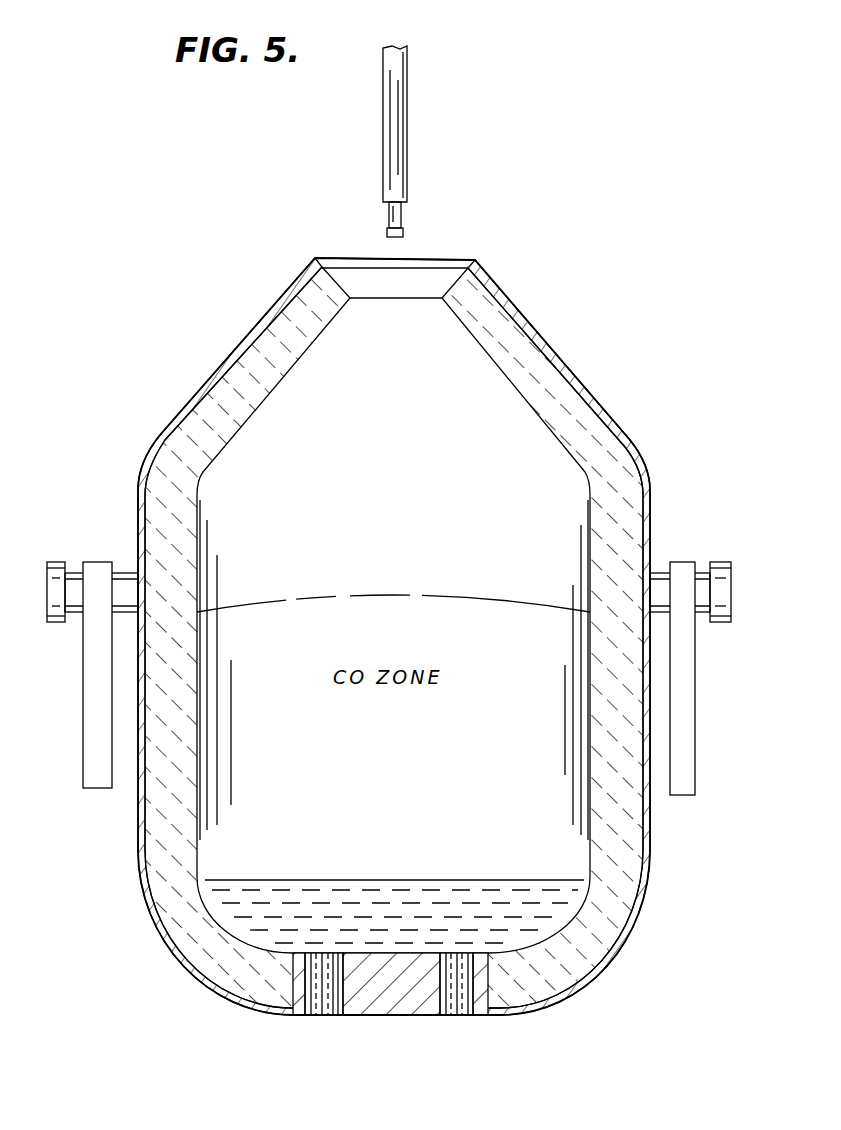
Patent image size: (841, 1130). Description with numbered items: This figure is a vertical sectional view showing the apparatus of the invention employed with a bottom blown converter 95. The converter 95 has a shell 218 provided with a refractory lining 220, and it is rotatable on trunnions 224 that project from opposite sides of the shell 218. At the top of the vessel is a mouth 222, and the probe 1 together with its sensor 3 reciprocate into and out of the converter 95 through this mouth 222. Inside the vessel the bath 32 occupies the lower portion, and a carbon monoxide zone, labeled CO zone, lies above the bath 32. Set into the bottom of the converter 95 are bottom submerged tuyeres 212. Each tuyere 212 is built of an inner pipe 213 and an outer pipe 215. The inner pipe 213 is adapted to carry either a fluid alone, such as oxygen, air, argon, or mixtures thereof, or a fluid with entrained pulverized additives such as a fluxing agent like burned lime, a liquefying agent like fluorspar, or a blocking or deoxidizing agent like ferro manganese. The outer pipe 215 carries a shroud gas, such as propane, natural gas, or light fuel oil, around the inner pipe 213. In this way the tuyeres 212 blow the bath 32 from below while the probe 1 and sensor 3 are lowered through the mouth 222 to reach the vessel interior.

The probe 1 is at (411, 140).
The sensor 3 is at (405, 222).
The mouth 222 is at (456, 263).
The bottom blown converter 95 is at (583, 375).
The refractory lining 220 is at (593, 420).
The shell 218 is at (626, 443).
The trunnions 224 is at (53, 562).
The outer pipe 215 is at (309, 951).
The inner pipe 213 is at (325, 951).
The bath 32 is at (413, 886).
The tuyeres 212 is at (308, 1020).